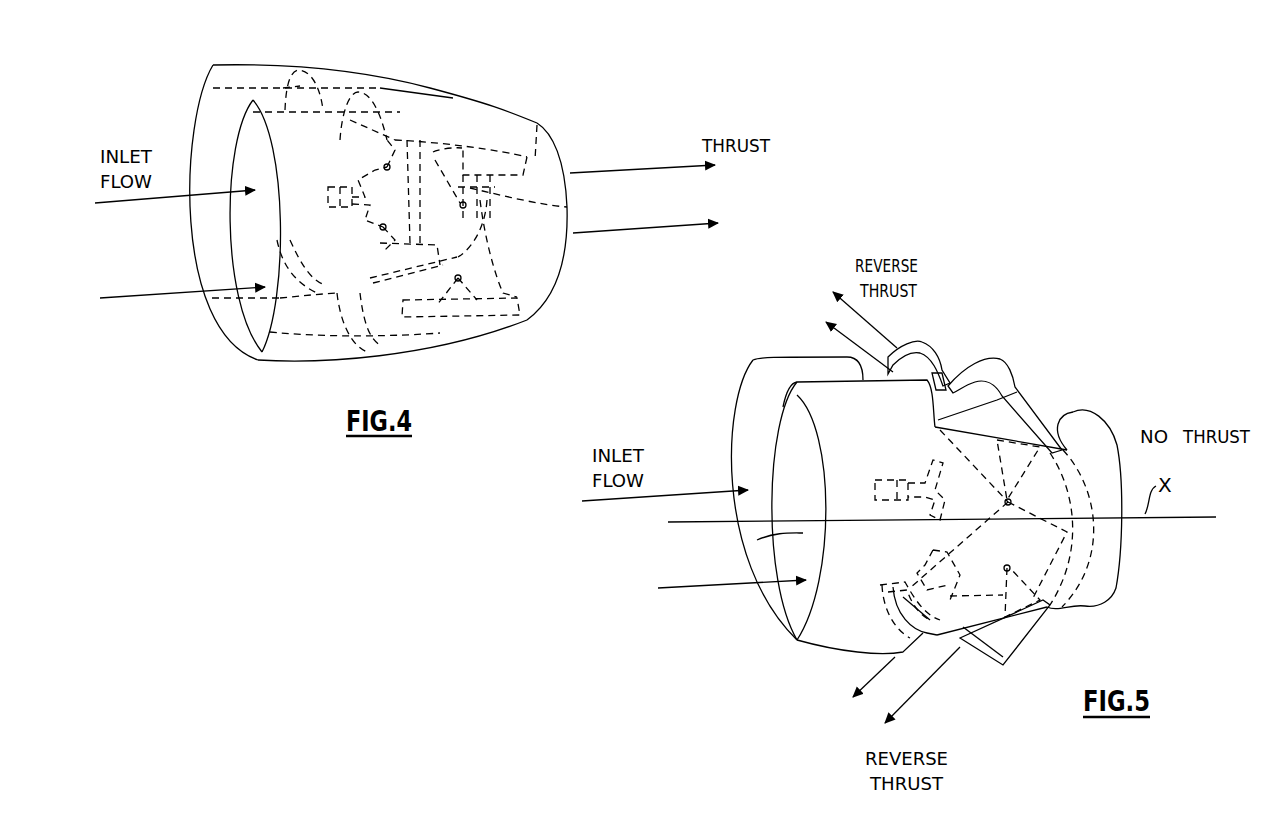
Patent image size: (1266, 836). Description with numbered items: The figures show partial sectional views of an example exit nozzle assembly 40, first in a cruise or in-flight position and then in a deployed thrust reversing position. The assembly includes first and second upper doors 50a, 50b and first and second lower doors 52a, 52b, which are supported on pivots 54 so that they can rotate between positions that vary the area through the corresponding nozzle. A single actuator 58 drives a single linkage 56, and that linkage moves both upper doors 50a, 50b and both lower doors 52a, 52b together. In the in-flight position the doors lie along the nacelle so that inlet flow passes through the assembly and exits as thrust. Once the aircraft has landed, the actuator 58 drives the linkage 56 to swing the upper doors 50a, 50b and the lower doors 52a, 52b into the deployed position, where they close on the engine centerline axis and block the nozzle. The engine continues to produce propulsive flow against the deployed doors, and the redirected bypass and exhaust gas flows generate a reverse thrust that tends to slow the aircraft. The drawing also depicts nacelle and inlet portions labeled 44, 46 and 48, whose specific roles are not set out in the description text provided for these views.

In FIG. 4, the nozzle assembly 40 is at (499, 48).
In FIG. 5, the nozzle assembly 40 is at (1068, 300).
In FIG. 4, the nacelle 44 is at (265, 75).
In FIG. 5, the nacelle 44 is at (803, 367).
In FIG. 4, the inlet 46 is at (208, 218).
In FIG. 5, the inlet 46 is at (753, 508).
In FIG. 4, the inner duct 48 is at (247, 315).
In FIG. 5, the inner duct 48 is at (757, 540).
In FIG. 4, the first upper door 50a is at (370, 73).
In FIG. 5, the first upper door 50a is at (945, 362).
In FIG. 4, the second upper door 50b is at (413, 112).
In FIG. 5, the second upper door 50b is at (1020, 396).
In FIG. 5, the first lower door 52a is at (933, 658).
In FIG. 4, the second lower door 52b is at (392, 350).
In FIG. 5, the second lower door 52b is at (1025, 622).
In FIG. 4, the pivots 54 is at (570, 207).
In FIG. 5, the pivots 54 is at (1016, 513).
In FIG. 4, the linkage 56 is at (352, 228).
In FIG. 5, the linkage 56 is at (916, 522).
In FIG. 4, the actuator 58 is at (330, 190).
In FIG. 5, the actuator 58 is at (878, 486).